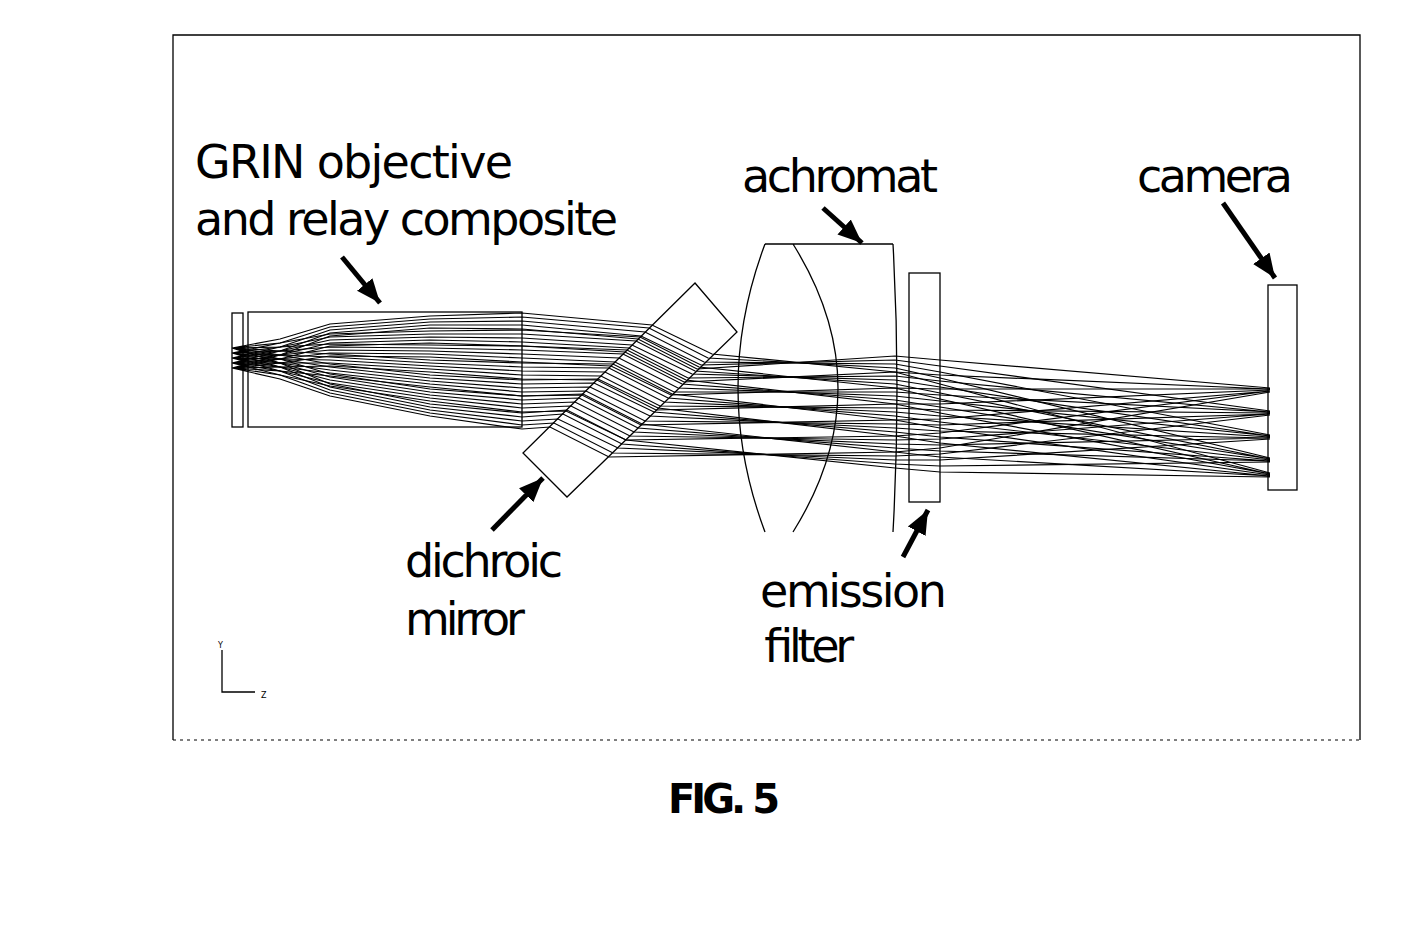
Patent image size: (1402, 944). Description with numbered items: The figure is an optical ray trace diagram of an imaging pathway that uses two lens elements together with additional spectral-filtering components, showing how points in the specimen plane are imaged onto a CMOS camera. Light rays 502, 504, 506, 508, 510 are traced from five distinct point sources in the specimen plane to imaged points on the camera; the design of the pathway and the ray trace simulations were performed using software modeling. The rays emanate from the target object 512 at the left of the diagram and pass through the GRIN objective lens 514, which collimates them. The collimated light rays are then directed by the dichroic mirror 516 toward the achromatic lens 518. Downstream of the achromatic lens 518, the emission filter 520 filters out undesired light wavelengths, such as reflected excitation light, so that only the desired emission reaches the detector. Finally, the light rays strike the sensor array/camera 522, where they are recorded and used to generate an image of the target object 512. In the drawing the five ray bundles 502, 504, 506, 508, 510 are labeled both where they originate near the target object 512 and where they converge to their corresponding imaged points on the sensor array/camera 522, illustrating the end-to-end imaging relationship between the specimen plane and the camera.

The light ray 502 is at (227, 348).
The light ray 504 is at (227, 353).
The light ray 506 is at (227, 358).
The light ray 508 is at (225, 366).
The light ray 510 is at (227, 372).
The target object 512 is at (233, 315).
The GRIN objective lens 514 is at (293, 312).
The dichroic mirror 516 is at (697, 283).
The achromatic lens 518 is at (886, 256).
The emission filter 520 is at (931, 285).
The sensor array/camera 522 is at (1284, 290).